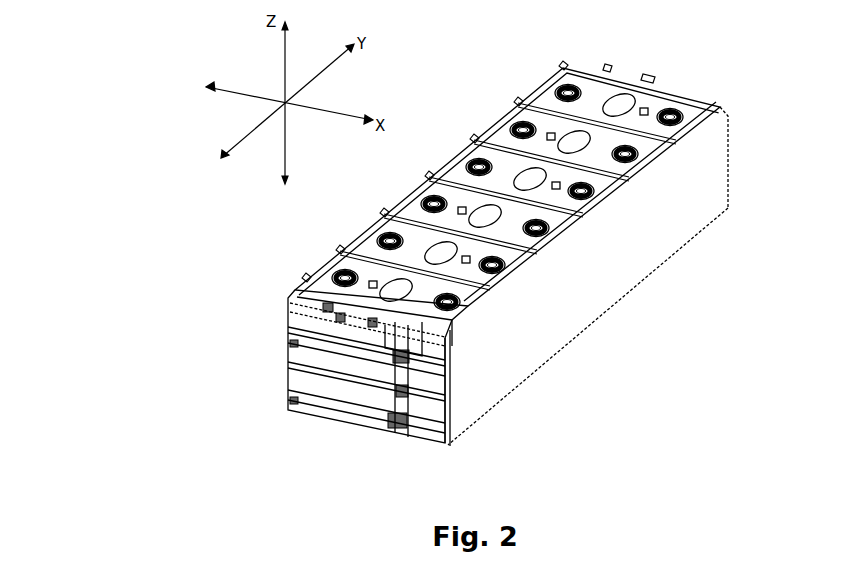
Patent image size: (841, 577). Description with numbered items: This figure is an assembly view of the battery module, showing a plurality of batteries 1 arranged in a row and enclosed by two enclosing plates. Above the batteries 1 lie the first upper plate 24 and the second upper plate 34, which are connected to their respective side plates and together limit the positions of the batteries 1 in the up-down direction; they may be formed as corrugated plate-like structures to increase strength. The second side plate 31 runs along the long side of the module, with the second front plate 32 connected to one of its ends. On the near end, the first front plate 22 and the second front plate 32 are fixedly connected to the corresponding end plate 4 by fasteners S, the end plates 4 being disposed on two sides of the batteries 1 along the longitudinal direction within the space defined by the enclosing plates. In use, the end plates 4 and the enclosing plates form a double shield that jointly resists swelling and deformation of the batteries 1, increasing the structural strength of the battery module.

The battery 1 is at (421, 187).
The end plate 4 is at (619, 75).
The first upper plate 24 is at (466, 150).
The second upper plate 34 is at (678, 104).
The second side plate 31 is at (603, 318).
The first front plate 22 is at (345, 402).
The second front plate 32 is at (422, 410).
The fastener S is at (443, 402).